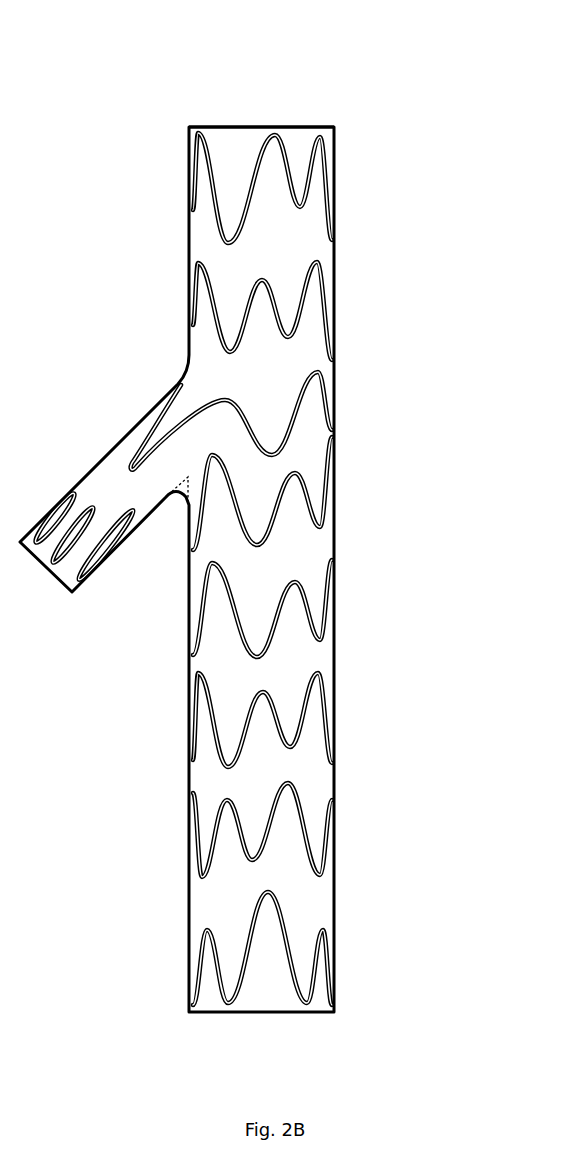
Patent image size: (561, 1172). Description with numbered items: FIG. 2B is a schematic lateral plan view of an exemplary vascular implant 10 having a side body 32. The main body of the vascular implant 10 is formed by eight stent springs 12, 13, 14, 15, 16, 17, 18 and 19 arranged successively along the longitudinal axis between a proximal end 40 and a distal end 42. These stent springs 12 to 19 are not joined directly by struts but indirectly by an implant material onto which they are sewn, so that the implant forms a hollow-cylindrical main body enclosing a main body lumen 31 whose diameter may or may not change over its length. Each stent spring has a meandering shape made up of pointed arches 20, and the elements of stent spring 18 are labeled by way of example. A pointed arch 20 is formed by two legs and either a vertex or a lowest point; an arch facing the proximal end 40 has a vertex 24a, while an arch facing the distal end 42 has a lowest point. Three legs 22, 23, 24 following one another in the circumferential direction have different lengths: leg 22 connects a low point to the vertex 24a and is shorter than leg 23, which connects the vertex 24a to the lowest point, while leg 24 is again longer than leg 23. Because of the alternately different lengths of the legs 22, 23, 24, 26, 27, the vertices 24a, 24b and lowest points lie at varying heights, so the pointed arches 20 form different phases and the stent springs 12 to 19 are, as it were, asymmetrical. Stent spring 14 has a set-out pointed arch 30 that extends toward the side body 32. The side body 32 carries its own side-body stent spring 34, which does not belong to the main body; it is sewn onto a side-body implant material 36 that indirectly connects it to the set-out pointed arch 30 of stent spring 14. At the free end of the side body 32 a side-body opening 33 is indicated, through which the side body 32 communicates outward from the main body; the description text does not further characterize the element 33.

The vascular implant 10 is at (135, 237).
The stent spring 12 is at (330, 163).
The stent spring 13 is at (328, 288).
The stent spring 14 is at (332, 392).
The stent spring 15 is at (332, 490).
The stent spring 16 is at (332, 612).
The stent spring 17 is at (190, 707).
The stent spring 18 is at (330, 852).
The stent spring 19 is at (330, 950).
The pointed arch 20 is at (188, 148).
The leg 22 is at (205, 297).
The leg 23 is at (207, 742).
The leg 24 is at (243, 735).
The vertex 24a is at (190, 673).
The vertex 24b is at (262, 688).
The leg 26 is at (283, 733).
The leg 27 is at (303, 690).
The set-out pointed arch 30 is at (147, 435).
The main body lumen 31 is at (248, 1018).
The side body 32 is at (90, 472).
The side branch opening 33 is at (45, 570).
The side-body stent spring 34 is at (45, 513).
The side-body implant material 36 is at (316, 908).
The proximal end 40 is at (200, 120).
The distal end 42 is at (325, 1020).